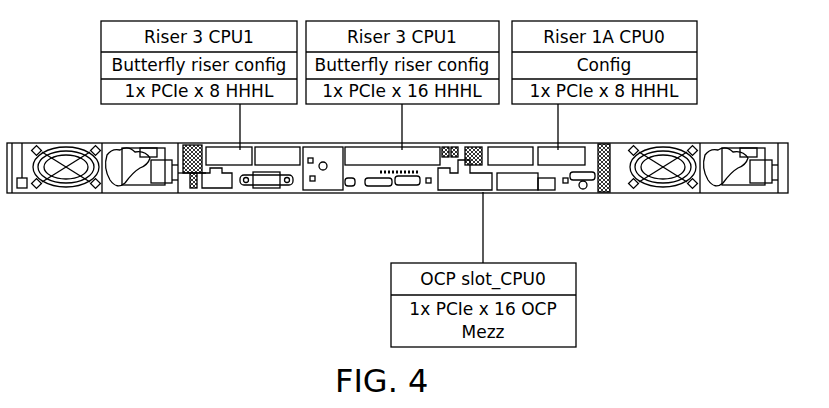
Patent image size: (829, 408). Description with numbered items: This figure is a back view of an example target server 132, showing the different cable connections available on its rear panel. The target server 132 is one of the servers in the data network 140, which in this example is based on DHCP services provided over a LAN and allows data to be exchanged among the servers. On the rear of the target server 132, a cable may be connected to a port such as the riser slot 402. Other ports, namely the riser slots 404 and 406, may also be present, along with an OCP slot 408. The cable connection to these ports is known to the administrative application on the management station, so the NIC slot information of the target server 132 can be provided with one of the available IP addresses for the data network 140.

The target server 132 is at (73, 143).
The data network 140 is at (745, 143).
The riser 1A slot 402 is at (567, 155).
The riser slot 404 is at (403, 155).
The riser slot 406 is at (223, 157).
The OCP slot 408 is at (463, 185).